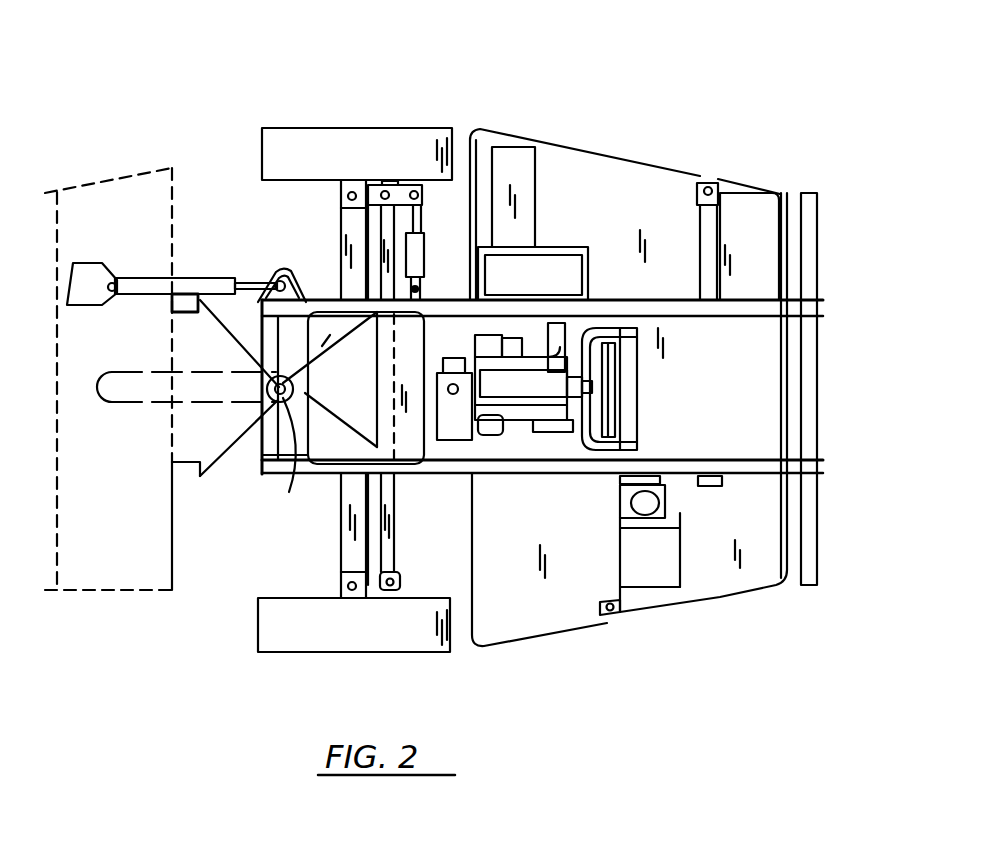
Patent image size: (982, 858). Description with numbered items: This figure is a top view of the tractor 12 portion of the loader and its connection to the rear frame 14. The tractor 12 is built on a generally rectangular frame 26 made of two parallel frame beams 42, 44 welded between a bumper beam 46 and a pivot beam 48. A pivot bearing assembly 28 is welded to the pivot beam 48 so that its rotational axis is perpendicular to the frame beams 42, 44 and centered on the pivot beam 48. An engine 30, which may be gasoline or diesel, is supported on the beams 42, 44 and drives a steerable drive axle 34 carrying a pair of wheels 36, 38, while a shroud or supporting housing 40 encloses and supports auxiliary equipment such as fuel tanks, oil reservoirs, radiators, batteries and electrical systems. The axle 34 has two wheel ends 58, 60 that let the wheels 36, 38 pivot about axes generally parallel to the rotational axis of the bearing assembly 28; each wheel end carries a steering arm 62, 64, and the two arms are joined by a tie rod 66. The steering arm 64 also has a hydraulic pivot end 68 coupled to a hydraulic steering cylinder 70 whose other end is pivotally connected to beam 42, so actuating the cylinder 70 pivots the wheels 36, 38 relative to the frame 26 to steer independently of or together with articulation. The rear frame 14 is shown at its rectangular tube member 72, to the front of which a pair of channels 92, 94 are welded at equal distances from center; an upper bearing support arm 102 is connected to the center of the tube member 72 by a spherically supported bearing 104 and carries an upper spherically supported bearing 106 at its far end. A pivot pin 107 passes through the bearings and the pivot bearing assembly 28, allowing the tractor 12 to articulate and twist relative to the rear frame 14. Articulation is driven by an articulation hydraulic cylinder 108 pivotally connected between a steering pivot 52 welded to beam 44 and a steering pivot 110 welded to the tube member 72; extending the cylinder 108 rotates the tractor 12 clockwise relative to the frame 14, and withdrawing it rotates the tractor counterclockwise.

The tractor 12 is at (566, 655).
The rear frame 14 is at (173, 192).
The frame 26 is at (828, 455).
The pivot bearing assembly 28 is at (312, 391).
The engine 30 is at (520, 412).
The steerable drive axle 34 is at (340, 534).
The wheel 36 is at (358, 643).
The wheel 38 is at (263, 128).
The shroud or supporting housing 40 is at (748, 466).
The frame beam 42 is at (788, 305).
The frame beam 44 is at (788, 468).
The bumper beam 46 is at (812, 553).
The pivot beam 48 is at (262, 458).
The steering pivot 52 is at (282, 270).
The wheel end 58 is at (340, 585).
The wheel end 60 is at (340, 190).
The steering arm 62 is at (390, 578).
The steering arm 64 is at (402, 186).
The tie rod 66 is at (397, 523).
The hydraulic pivot end 68 is at (420, 195).
The hydraulic steering cylinder 70 is at (425, 266).
The rectangular tube member 72 is at (173, 557).
The channel 92 is at (172, 307).
The channel 94 is at (185, 478).
The upper bearing support arm 102 is at (229, 343).
The spherically supported bearing 104 is at (112, 405).
The upper spherically supported bearing 106 is at (339, 329).
The pivot pin 107 is at (290, 470).
The articulation hydraulic cylinder 108 is at (122, 278).
The steering pivot 110 is at (78, 262).